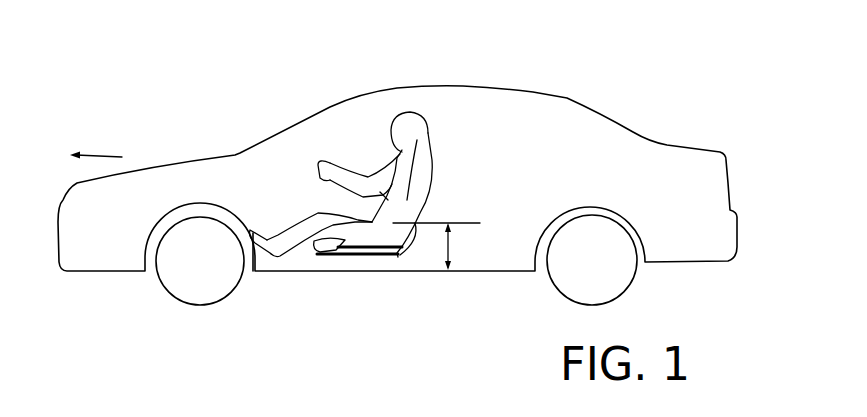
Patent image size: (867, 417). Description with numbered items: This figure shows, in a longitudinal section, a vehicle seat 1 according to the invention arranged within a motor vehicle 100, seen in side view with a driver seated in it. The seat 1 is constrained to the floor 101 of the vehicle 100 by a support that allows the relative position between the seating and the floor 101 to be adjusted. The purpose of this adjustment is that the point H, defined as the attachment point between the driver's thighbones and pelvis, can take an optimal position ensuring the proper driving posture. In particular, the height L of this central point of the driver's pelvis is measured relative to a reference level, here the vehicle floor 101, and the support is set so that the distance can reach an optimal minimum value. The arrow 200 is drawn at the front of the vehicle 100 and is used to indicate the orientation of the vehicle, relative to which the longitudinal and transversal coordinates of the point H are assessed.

The vehicle 100 is at (563, 86).
The vehicle forward direction 200 is at (96, 145).
The vehicle seat 1 is at (446, 156).
The floor 101 is at (390, 262).
The point H is at (400, 217).
The height L is at (452, 245).